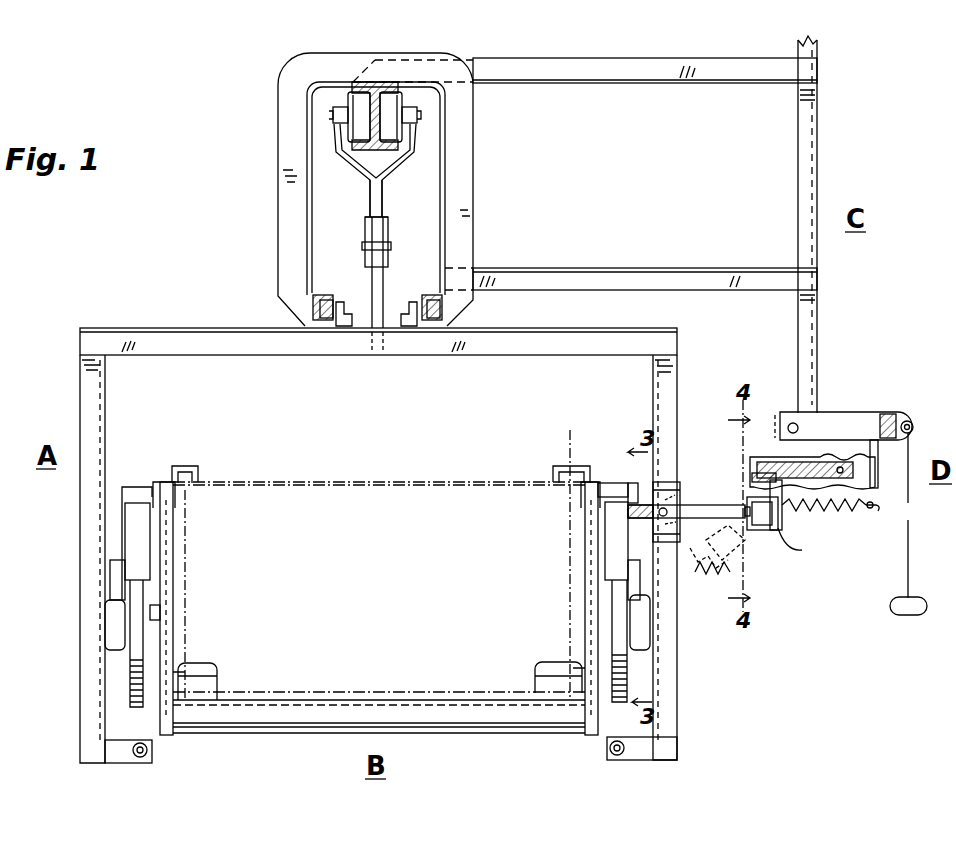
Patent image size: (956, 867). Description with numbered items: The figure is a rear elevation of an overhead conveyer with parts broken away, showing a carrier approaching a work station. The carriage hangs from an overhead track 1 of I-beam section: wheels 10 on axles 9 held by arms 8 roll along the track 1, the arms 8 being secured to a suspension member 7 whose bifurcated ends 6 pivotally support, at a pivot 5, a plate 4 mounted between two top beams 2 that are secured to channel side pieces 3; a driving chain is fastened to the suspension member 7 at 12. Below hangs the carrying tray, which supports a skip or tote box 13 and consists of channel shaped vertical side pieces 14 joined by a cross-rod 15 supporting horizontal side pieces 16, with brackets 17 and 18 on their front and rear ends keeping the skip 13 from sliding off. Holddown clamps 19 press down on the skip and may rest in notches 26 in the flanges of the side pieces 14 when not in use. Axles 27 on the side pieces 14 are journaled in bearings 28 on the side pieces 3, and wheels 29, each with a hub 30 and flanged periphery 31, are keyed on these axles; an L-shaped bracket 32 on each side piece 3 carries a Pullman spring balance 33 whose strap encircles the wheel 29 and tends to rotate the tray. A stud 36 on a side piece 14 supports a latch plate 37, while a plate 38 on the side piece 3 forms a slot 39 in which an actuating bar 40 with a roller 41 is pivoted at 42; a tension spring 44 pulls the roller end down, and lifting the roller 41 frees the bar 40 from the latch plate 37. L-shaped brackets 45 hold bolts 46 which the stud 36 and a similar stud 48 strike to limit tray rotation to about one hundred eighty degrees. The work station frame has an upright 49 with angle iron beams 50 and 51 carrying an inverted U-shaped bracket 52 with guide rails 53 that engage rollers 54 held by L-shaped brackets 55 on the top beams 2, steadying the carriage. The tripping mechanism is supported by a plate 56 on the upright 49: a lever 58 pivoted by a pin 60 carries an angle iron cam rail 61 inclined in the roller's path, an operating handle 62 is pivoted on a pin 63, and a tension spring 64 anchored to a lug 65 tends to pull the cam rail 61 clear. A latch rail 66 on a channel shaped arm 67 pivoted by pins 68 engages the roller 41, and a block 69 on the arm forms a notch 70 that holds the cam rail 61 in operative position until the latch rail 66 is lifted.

The overhead track 1 is at (360, 148).
The top beams 2 is at (197, 330).
The channel side pieces 3 is at (105, 402).
The plate 4 is at (384, 292).
The pivot 5 is at (391, 248).
The bifurcated ends 6 is at (365, 236).
The suspension member 7 is at (382, 197).
The arms 8 is at (358, 170).
The axles 9 is at (332, 118).
The wheels 10 is at (352, 108).
The chain fastening point 12 is at (385, 214).
The skip or tote box 13 is at (290, 494).
The vertical side pieces 14 is at (173, 655).
The cross-rod 15 is at (477, 730).
The horizontal side pieces 16 is at (182, 674).
The bracket 17 is at (217, 673).
The bracket 18 is at (217, 686).
The holddown clamps 19 is at (185, 464).
The notches 26 is at (163, 478).
The axles 27 is at (174, 625).
The bearings 28 is at (112, 620).
The wheels 29 is at (130, 680).
The hub 30 is at (160, 612).
The flanged periphery 31 is at (137, 710).
The L-shaped bracket 32 is at (115, 565).
The Pullman spring balance 33 is at (133, 547).
The stud 36 is at (611, 482).
The latch plate 37 is at (630, 483).
The plate 38 is at (672, 490).
The slot 39 is at (668, 504).
The actuating bar 40 is at (703, 504).
The roller 41 is at (760, 531).
The pivot 42 is at (695, 562).
The tension spring 44 is at (712, 562).
The L-shaped brackets 45 is at (128, 764).
The bolts 46 is at (148, 750).
The stud 48 is at (142, 490).
The upright 49 is at (814, 178).
The angle iron beam 50 is at (662, 283).
The angle iron beam 51 is at (668, 88).
The inverted U-shaped bracket 52 is at (474, 180).
The guide rails 53 is at (324, 296).
The rollers 54 is at (334, 308).
The L-shaped brackets 55 is at (347, 326).
The plate 56 is at (870, 476).
The lever 58 is at (781, 440).
The pin 60 is at (798, 426).
The cam rail 61 is at (795, 548).
The operating handle 62 is at (909, 552).
The pin 63 is at (914, 425).
The tension spring 64 is at (840, 510).
The lug 65 is at (872, 509).
The latch rail 66 is at (752, 478).
The channel shaped arm 67 is at (778, 464).
The pins 68 is at (845, 466).
The block 69 is at (800, 478).
The notch 70 is at (770, 496).